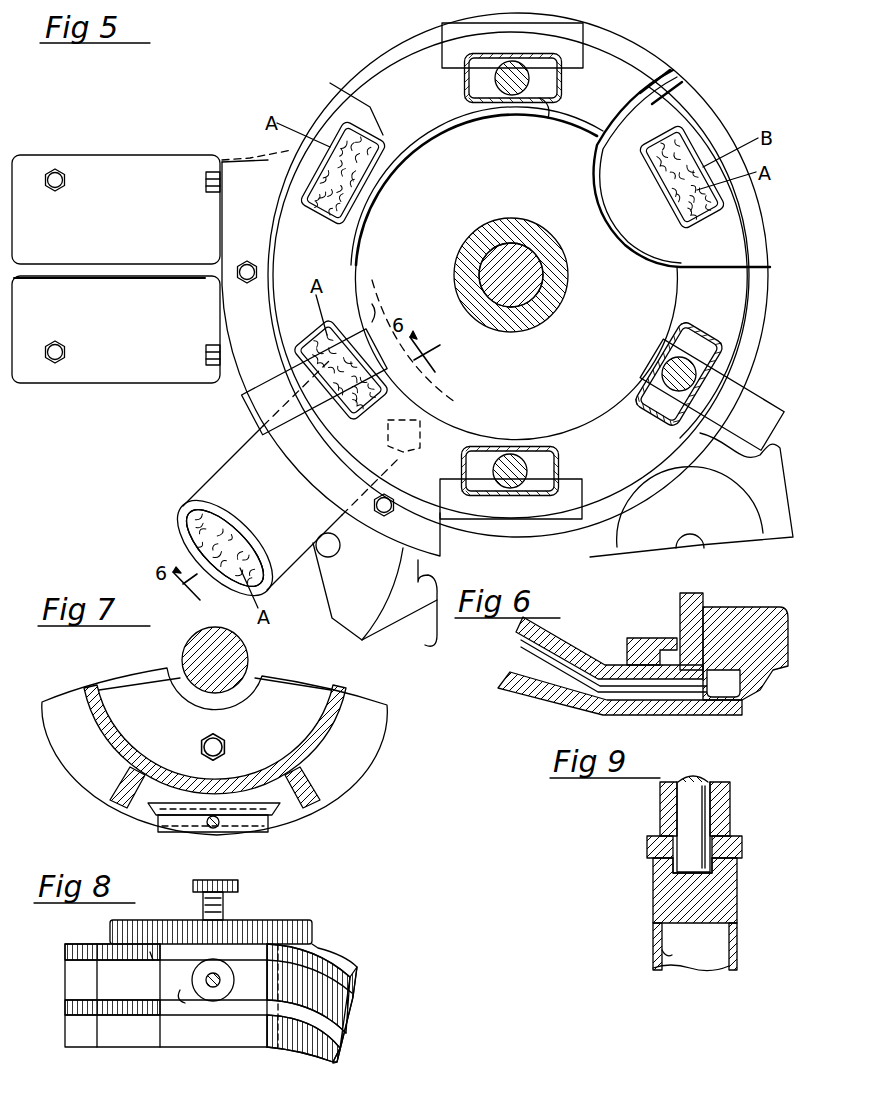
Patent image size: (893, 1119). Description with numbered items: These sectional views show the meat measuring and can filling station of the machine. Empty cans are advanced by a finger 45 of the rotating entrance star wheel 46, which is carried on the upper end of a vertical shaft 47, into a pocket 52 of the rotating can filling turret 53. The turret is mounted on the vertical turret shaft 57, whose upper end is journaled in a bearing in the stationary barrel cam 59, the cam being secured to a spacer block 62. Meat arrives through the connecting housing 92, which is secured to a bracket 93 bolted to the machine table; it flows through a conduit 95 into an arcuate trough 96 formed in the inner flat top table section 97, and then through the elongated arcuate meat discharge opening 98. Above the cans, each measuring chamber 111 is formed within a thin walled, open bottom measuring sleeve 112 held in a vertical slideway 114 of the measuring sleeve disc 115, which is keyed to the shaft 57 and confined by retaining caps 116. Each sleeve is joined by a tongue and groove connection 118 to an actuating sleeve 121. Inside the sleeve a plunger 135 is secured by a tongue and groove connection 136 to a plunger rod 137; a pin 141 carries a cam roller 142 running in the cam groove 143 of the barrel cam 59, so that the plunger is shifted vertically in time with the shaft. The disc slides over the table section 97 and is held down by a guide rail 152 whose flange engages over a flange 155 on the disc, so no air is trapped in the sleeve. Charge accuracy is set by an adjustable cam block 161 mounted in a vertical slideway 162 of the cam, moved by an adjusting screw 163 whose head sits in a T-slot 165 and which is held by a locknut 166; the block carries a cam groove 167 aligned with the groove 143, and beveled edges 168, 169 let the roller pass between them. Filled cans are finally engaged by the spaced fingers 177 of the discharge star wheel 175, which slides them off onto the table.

In FIG. 5, the finger 45 is at (428, 622).
In FIG. 5, the entrance star wheel 46 is at (367, 630).
In FIG. 5, the vertical shaft 47 is at (328, 558).
In FIG. 5, the pocket 52 is at (708, 222).
In FIG. 5, the can filling turret 53 is at (637, 130).
In FIG. 5, the vertical turret shaft 57 is at (508, 258).
In FIG. 7, the vertical turret shaft 57 is at (193, 697).
In FIG. 7, the stationary barrel cam 59 is at (332, 768).
In FIG. 8, the stationary barrel cam 59 is at (360, 960).
In FIG. 7, the spacer block 62 is at (215, 746).
In FIG. 5, the connecting housing 92 is at (250, 448).
In FIG. 6, the connecting housing 92 is at (523, 687).
In FIG. 5, the bracket 93 is at (116, 269).
In FIG. 5, the conduit 95 is at (187, 523).
In FIG. 6, the conduit 95 is at (522, 662).
In FIG. 6, the arcuate trough 96 is at (723, 693).
In FIG. 5, the inner flat top table section 97 is at (440, 392).
In FIG. 5, the arcuate meat discharge opening 98 is at (420, 443).
In FIG. 6, the arcuate meat discharge opening 98 is at (725, 660).
In FIG. 5, the measuring chamber 111 is at (545, 100).
In FIG. 9, the measuring chamber 111 is at (668, 953).
In FIG. 5, the measuring sleeve 112 is at (563, 93).
In FIG. 9, the measuring sleeve 112 is at (735, 948).
In FIG. 5, the vertical slideway 114 is at (382, 125).
In FIG. 5, the measuring sleeve disc 115 is at (413, 77).
In FIG. 5, the retaining cap 116 is at (548, 45).
In FIG. 6, the retaining cap 116 is at (692, 613).
In FIG. 9, the tongue and groove connection 118 is at (740, 843).
In FIG. 9, the actuating sleeve 121 is at (730, 803).
In FIG. 5, the plunger 135 is at (483, 88).
In FIG. 9, the plunger 135 is at (710, 900).
In FIG. 9, the tongue and groove connection 136 is at (675, 872).
In FIG. 5, the plunger rod 137 is at (512, 80).
In FIG. 9, the plunger rod 137 is at (697, 783).
In FIG. 8, the pin 141 is at (217, 985).
In FIG. 8, the cam roller 142 is at (207, 967).
In FIG. 8, the cam groove 143 is at (358, 1012).
In FIG. 5, the guide rail 152 is at (302, 458).
In FIG. 6, the guide rail 152 is at (638, 650).
In FIG. 5, the flange 155 is at (292, 150).
In FIG. 7, the adjustable cam block 161 is at (237, 835).
In FIG. 8, the adjustable cam block 161 is at (200, 1007).
In FIG. 7, the vertical slideway 162 is at (152, 827).
In FIG. 8, the vertical slideway 162 is at (277, 977).
In FIG. 7, the adjusting screw 163 is at (212, 823).
In FIG. 7, the T-slot 165 is at (173, 818).
In FIG. 8, the locknut 166 is at (215, 917).
In FIG. 8, the cam groove 167 is at (187, 990).
In FIG. 8, the beveled edge 168 is at (253, 945).
In FIG. 8, the beveled edge 169 is at (153, 952).
In FIG. 5, the discharge star wheel 175 is at (691, 495).
In FIG. 5, the finger 177 is at (772, 447).